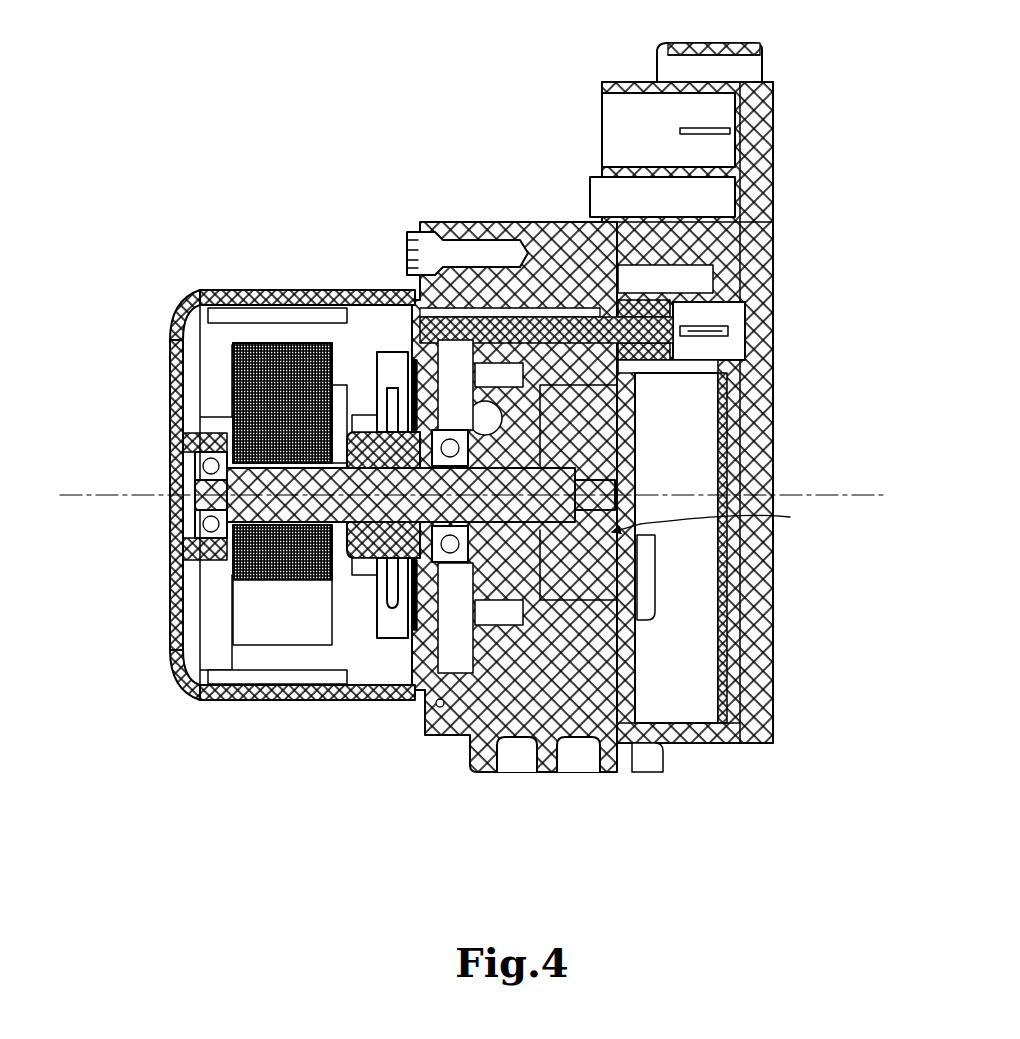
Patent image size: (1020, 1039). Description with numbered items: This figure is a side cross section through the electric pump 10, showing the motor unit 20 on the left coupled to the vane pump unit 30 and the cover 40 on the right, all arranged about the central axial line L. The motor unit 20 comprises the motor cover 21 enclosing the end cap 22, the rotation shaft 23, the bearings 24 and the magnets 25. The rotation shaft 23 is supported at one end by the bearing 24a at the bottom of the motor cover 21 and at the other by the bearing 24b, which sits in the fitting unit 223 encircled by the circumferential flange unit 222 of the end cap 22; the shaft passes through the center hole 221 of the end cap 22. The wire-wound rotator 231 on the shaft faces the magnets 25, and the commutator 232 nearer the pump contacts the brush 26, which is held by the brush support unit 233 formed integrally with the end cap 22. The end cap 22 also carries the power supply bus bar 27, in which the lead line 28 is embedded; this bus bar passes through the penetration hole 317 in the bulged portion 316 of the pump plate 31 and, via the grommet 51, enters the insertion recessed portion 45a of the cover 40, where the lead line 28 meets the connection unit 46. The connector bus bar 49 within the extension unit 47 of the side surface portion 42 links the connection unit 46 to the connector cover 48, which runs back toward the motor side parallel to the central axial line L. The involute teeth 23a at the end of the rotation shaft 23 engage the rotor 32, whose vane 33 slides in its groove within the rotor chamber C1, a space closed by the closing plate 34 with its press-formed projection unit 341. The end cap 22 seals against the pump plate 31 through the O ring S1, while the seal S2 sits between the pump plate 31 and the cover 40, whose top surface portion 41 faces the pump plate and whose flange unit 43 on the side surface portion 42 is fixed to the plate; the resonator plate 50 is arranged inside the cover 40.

The electric pump 10 is at (472, 75).
The motor unit 20 is at (246, 228).
The motor cover 21 is at (255, 672).
The end cap 22 is at (417, 660).
The rotation shaft 23 is at (250, 500).
The involute teeth 23a is at (548, 690).
The bearings 24 is at (263, 578).
The bearing 24a is at (193, 447).
The bearing 24b is at (458, 565).
The magnets 25 is at (305, 305).
The brush 26 is at (393, 633).
The power supply bus bar 27 is at (548, 318).
The lead line 28 is at (703, 338).
The vane pump unit 30 is at (503, 192).
The pump plate 31 is at (478, 228).
The rotor 32 is at (635, 453).
The vane 33 is at (590, 505).
The closing plate 34 is at (633, 425).
The top surface portion 41 is at (773, 574).
The cover 40 is at (790, 65).
The side surface portion 42 is at (744, 744).
The flange unit 43 is at (618, 768).
The insertion recessed portion 45a is at (662, 300).
The connection unit 46 is at (724, 316).
The extension unit 47 is at (763, 190).
The connector cover 48 is at (622, 82).
The connector bus bar 49 is at (717, 140).
The resonator plate 50 is at (722, 430).
The grommet 51 is at (617, 272).
The center hole 221 is at (405, 507).
The circumferential flange unit 222 is at (455, 385).
The fitting unit 223 is at (452, 690).
The rotator 231 is at (277, 347).
The commutator 232 is at (366, 437).
The brush support unit 233 is at (386, 352).
The bulged portion 316 is at (580, 250).
The penetration hole 317 is at (552, 325).
The projection unit 341 is at (655, 625).
The rotor chamber C1 is at (721, 520).
The central axial line L is at (828, 492).
The O ring S1 is at (425, 728).
The seal S2 is at (617, 738).